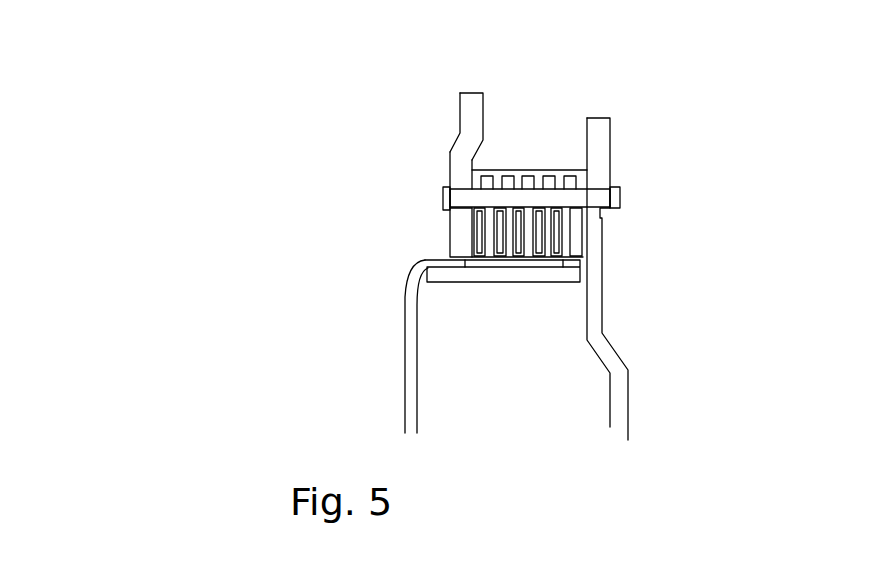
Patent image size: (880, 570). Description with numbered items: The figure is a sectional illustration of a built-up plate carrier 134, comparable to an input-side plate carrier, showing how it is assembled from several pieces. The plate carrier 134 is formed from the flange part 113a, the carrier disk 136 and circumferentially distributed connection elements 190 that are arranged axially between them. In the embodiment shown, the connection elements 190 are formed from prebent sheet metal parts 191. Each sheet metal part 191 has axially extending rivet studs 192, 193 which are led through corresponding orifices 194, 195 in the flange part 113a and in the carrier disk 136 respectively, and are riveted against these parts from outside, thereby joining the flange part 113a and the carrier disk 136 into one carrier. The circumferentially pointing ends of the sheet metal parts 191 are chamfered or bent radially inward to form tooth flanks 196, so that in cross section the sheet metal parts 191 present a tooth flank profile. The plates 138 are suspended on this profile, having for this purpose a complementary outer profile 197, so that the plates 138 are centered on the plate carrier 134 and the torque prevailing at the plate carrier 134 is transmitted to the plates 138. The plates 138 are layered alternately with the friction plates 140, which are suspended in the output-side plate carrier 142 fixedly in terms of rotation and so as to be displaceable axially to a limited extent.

The flange part 113a is at (450, 178).
The built-up plate carrier 134 is at (667, 98).
The carrier disk 136 is at (603, 147).
The plates 138 is at (455, 208).
The friction plates 140 is at (560, 232).
The output-side plate carrier 142 is at (512, 275).
The connection elements 190 is at (560, 180).
The prebent sheet metal parts 191 is at (568, 173).
The rivet stud 192 is at (443, 197).
The rivet stud 193 is at (613, 200).
The orifice 194 is at (485, 227).
The orifice 195 is at (600, 187).
The tooth flanks 196 is at (567, 210).
The complementary outer profile 197 is at (507, 198).